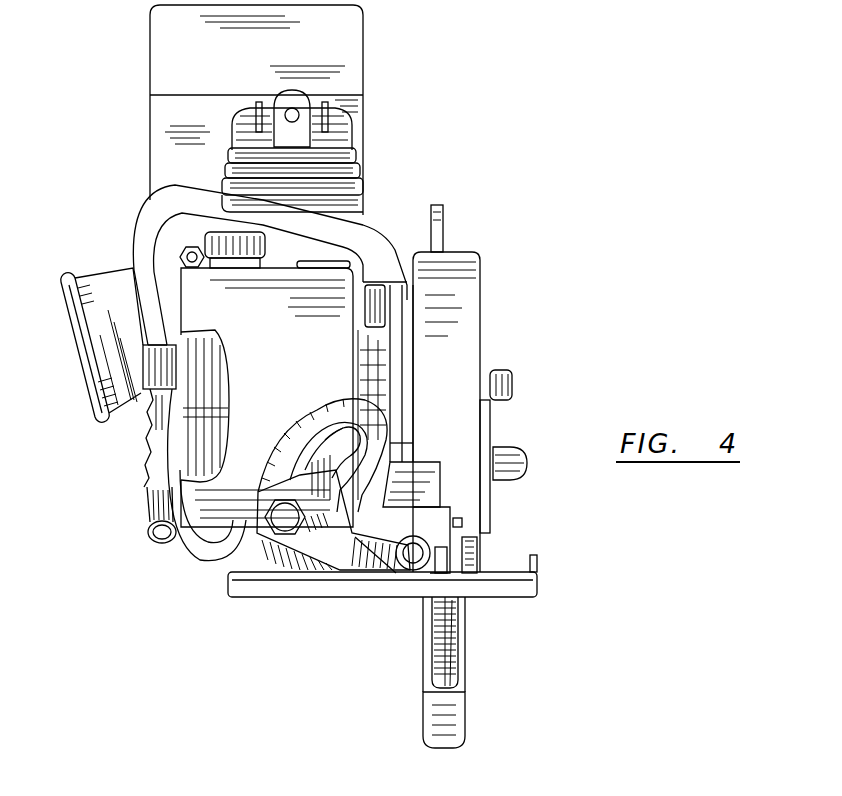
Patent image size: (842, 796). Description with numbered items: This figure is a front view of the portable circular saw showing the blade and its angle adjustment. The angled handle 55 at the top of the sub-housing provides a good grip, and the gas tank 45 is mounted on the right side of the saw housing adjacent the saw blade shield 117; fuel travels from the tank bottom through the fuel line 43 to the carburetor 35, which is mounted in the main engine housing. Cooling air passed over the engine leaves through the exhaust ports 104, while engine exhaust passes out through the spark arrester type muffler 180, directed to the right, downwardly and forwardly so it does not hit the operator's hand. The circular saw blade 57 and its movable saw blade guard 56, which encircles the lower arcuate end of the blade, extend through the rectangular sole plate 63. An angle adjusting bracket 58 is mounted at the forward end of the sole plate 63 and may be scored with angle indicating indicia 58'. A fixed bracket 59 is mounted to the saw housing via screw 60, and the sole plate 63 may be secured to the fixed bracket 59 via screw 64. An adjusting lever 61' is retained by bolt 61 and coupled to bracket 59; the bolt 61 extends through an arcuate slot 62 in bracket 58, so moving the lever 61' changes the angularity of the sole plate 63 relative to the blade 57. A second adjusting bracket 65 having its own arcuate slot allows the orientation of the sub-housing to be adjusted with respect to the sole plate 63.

The carburetor 35 is at (126, 268).
The fuel line 43 is at (163, 464).
The gas tank 45 is at (276, 328).
The handle 55 is at (196, 209).
The saw blade guard 56 is at (464, 718).
The circular saw blade 57 is at (453, 657).
The angle adjusting bracket 58 is at (332, 409).
The angle indicating indicia 58' is at (303, 400).
The fixed bracket 59 is at (443, 510).
The screw 60 is at (462, 524).
The bolt 61 is at (206, 538).
The adjusting lever 61' is at (317, 570).
The arcuate slot 62 is at (316, 425).
The sole plate 63 is at (537, 568).
The screw 64 is at (407, 568).
The second adjusting bracket 65 is at (443, 210).
The exhaust ports 104 is at (188, 424).
The saw blade shield 117 is at (480, 290).
The spark arrester type muffler 180 is at (140, 483).